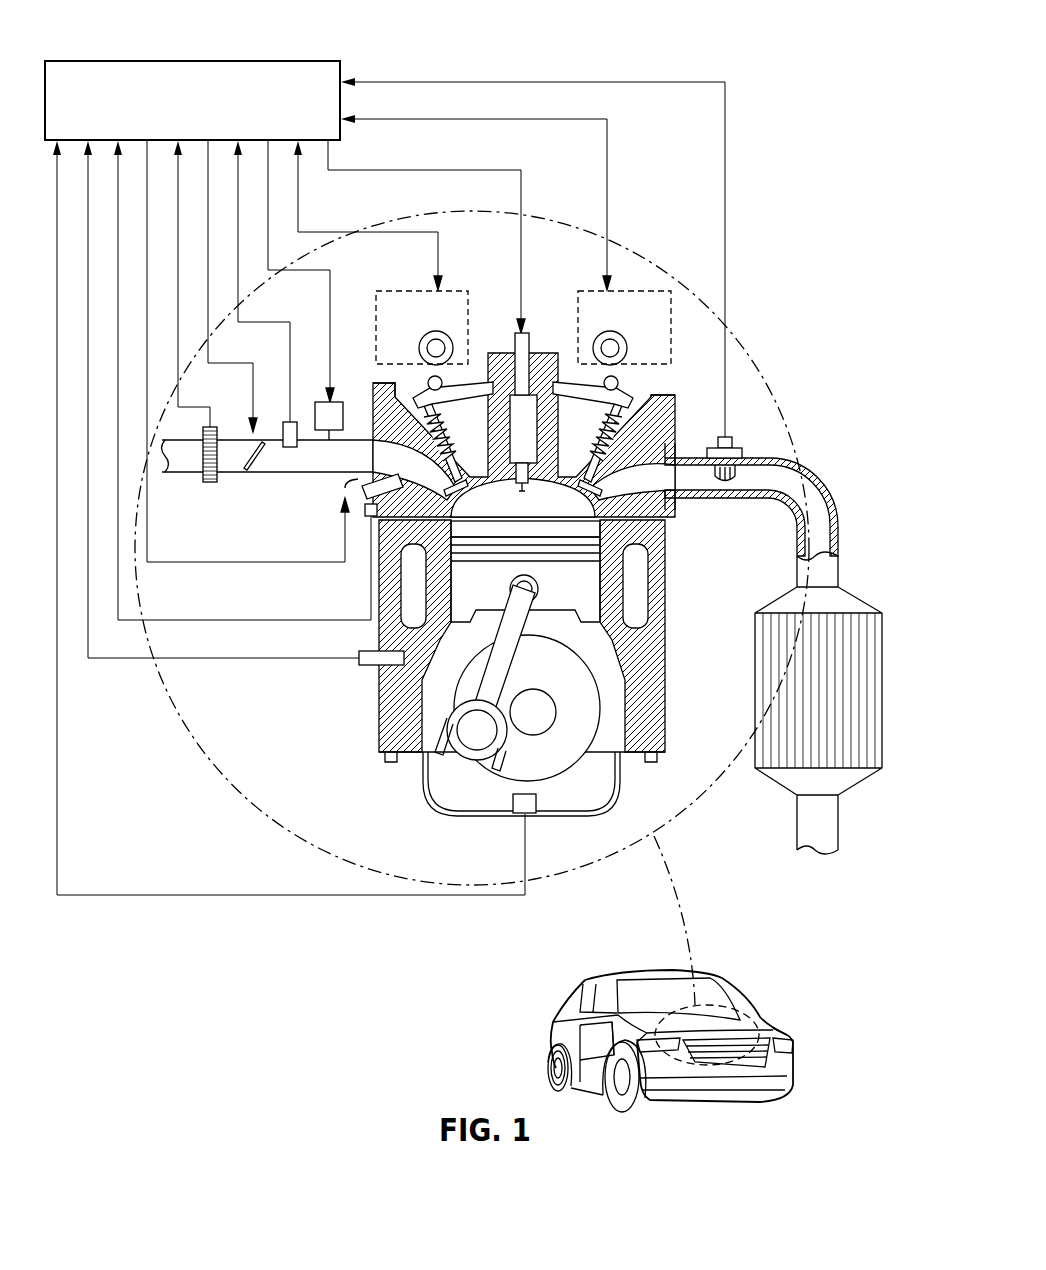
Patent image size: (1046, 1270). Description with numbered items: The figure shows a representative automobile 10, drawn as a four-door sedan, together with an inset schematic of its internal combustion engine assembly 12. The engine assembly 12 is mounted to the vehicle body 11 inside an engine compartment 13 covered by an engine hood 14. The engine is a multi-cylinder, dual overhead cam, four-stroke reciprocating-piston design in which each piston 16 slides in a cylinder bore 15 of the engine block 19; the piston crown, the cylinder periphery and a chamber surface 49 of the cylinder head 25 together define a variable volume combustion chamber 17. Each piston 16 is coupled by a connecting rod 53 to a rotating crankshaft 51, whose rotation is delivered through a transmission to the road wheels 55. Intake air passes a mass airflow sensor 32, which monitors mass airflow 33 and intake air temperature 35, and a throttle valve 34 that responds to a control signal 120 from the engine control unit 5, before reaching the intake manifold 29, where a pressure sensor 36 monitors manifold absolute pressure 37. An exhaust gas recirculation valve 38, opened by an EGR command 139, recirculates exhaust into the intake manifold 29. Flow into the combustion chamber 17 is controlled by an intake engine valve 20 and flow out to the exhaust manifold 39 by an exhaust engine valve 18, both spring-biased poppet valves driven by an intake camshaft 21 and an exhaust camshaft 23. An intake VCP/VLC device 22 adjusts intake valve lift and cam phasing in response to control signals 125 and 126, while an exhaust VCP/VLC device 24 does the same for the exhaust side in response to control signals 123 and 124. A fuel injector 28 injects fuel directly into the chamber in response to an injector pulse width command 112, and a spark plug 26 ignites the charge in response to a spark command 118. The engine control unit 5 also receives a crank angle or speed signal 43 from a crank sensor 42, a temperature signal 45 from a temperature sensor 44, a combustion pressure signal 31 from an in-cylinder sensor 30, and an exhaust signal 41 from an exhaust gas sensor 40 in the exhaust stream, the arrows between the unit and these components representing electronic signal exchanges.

The engine control unit 5 is at (182, 114).
The automobile 10 is at (740, 945).
The vehicle body 11 is at (580, 978).
The internal combustion engine assembly 12 is at (153, 45).
The engine compartment 13 is at (618, 1033).
The engine hood 14 is at (760, 1028).
The cylinder bore 15 is at (600, 556).
The piston 16 is at (592, 585).
The combustion chamber 17 is at (476, 517).
The exhaust engine valve 18 is at (693, 492).
The engine block 19 is at (655, 728).
The intake engine valve 20 is at (340, 462).
The intake camshaft 21 is at (419, 350).
The intake VCP/VLC device 22 is at (396, 319).
The exhaust camshaft 23 is at (627, 350).
The exhaust VCP/VLC device 24 is at (621, 319).
The cylinder head 25 is at (665, 414).
The spark plug 26 is at (533, 335).
The fuel injector 28 is at (345, 486).
The intake manifold 29 is at (372, 432).
The in-cylinder sensor 30 is at (368, 520).
The in-cylinder sensor signal 31 is at (224, 616).
The mass airflow sensor 32 is at (215, 482).
The mass airflow 33 is at (208, 291).
The throttle valve 34 is at (255, 468).
The intake air temperature 35 is at (178, 399).
The pressure sensor 36 is at (286, 422).
The manifold absolute pressure 37 is at (268, 314).
The exhaust gas recirculation valve 38 is at (320, 402).
The exhaust manifold 39 is at (690, 456).
The exhaust gas sensor 40 is at (733, 440).
The exhaust gas sensor signal 41 is at (684, 79).
The crank sensor 42 is at (536, 812).
The crank angle/speed signal 43 is at (234, 892).
The temperature sensor 44 is at (378, 666).
The temperature signal 45 is at (270, 651).
The chamber surface 49 is at (600, 525).
The crankshaft 51 is at (566, 770).
The connecting rod 53 is at (448, 716).
The road wheel 55 is at (556, 1070).
The injector pulse width command 112 is at (176, 557).
The spark command 118 is at (482, 169).
The throttle control signal 120 is at (222, 359).
The exhaust valve lift control signal 123 is at (493, 189).
The exhaust cam phasing control signal 124 is at (538, 114).
The intake valve lift control signal 125 is at (370, 222).
The intake cam phasing control signal 126 is at (323, 229).
The EGR command 139 is at (327, 264).